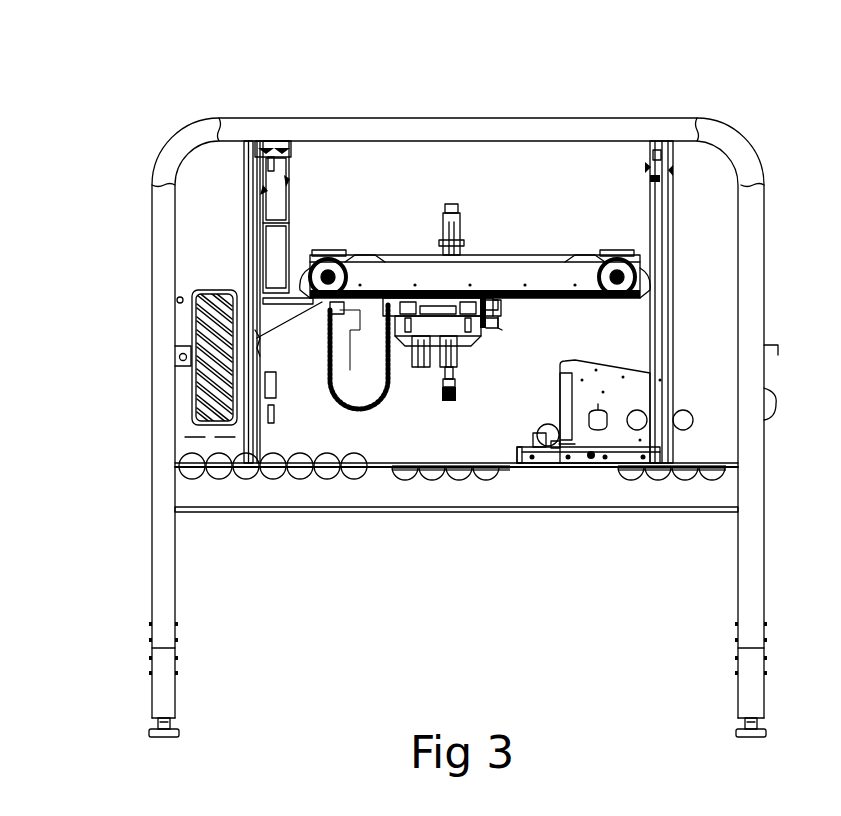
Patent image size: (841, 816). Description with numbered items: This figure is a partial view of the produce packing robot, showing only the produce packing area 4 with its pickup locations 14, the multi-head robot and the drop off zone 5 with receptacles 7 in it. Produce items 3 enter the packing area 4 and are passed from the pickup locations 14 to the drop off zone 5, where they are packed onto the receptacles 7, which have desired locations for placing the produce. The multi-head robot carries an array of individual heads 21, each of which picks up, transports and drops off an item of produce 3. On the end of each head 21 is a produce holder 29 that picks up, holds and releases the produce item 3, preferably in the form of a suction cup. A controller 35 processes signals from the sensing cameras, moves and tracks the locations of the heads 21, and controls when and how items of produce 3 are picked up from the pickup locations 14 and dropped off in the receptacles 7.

The produce packing area 4 is at (553, 66).
The drop off zone 5 is at (297, 427).
The controller 35 is at (283, 183).
The head 21 is at (462, 370).
The produce holder 29 is at (435, 406).
The receptacle 7 is at (435, 498).
The produce item 3 is at (552, 425).
The pickup location 14 is at (552, 454).